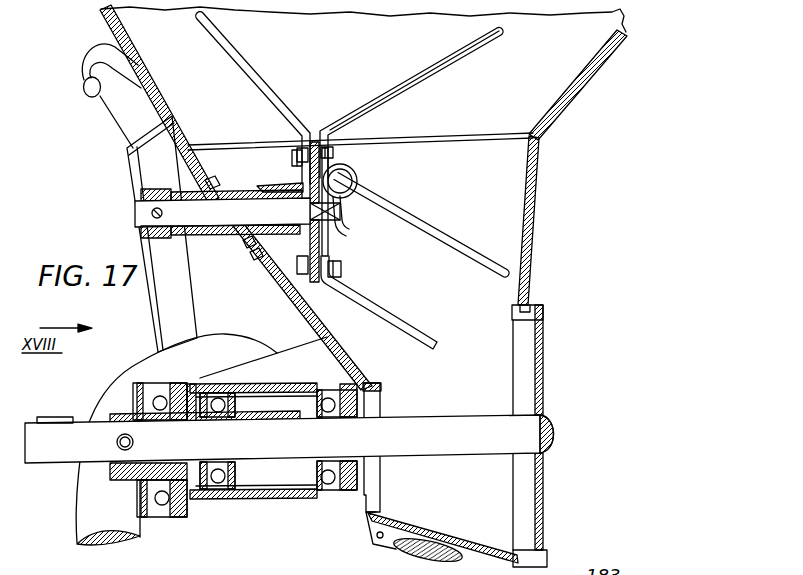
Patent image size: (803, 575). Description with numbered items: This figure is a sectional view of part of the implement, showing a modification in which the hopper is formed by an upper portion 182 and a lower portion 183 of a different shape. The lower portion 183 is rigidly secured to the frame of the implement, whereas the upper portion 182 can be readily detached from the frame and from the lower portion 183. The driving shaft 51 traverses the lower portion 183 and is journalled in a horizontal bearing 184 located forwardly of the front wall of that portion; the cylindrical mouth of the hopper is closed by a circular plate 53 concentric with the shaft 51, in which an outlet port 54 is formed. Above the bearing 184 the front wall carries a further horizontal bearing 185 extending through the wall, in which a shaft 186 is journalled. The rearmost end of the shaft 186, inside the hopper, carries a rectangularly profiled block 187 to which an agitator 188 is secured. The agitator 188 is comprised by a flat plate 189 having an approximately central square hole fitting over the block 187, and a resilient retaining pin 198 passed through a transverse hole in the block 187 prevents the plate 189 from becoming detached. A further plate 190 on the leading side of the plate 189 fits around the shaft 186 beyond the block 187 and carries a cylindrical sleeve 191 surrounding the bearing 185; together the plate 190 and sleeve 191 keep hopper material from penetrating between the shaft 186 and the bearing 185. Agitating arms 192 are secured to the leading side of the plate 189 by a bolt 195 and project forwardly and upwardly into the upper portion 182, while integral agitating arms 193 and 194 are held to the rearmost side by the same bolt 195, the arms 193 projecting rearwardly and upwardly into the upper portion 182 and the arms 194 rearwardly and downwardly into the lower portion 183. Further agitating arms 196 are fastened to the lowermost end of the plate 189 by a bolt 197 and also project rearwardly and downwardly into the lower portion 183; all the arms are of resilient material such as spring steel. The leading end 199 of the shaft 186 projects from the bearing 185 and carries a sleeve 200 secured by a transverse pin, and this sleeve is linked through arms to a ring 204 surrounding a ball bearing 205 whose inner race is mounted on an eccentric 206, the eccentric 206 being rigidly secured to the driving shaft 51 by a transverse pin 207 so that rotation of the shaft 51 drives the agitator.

The driving shaft 51 is at (480, 414).
The circular plate 53 is at (543, 358).
The outlet port 54 is at (544, 510).
The upper portion of the hopper 182 is at (587, 54).
The lower portion of the hopper 183 is at (536, 252).
The horizontal bearing 184 is at (257, 498).
The further horizontal bearing 185 is at (240, 191).
The shaft 186 is at (224, 228).
The rectangularly profiled block 187 is at (344, 216).
The agitator 188 is at (407, 84).
The flat plate 189 is at (329, 250).
The further plate 190 is at (283, 266).
The cylindrical sleeve 191 is at (277, 187).
The agitating arms 192 is at (253, 98).
The agitating arms 193 is at (489, 42).
The agitating arms 194 is at (461, 244).
The bolt 195 is at (334, 152).
The agitating arms 196 is at (431, 337).
The bolt 197 is at (343, 270).
The resilient retaining pin 198 is at (358, 172).
The leading end of the shaft 199 is at (140, 213).
The sleeve 200 is at (162, 186).
The ring 204 is at (160, 515).
The ball bearing 205 is at (164, 382).
The eccentric 206 is at (128, 481).
The transverse pin 207 is at (117, 442).